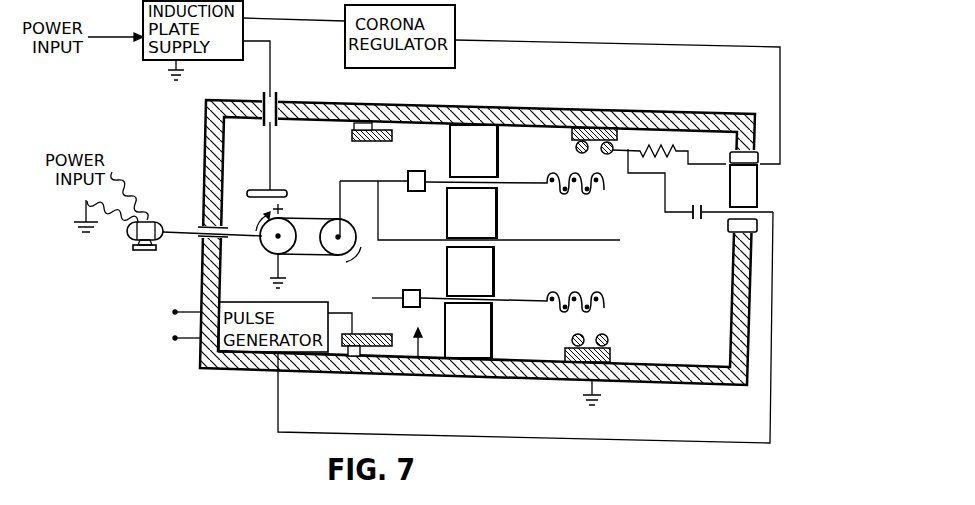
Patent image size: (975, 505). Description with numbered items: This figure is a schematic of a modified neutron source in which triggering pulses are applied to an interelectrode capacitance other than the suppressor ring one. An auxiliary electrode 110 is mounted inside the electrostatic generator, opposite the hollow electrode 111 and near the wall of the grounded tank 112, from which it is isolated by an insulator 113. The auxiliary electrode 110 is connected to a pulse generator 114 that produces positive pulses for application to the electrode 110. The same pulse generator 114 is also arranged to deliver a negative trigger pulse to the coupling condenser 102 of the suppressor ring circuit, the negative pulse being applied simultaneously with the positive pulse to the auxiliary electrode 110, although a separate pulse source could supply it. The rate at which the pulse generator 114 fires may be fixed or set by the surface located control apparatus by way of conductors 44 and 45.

The conductor 44 is at (175, 314).
The conductor 45 is at (175, 340).
The coupling capacitor 102 is at (506, 267).
The auxiliary electrode 110 is at (370, 141).
The hollow electrode 111 is at (358, 181).
The tank 112 is at (385, 376).
The insulator 113 is at (355, 352).
The pulse generator 114 is at (240, 368).